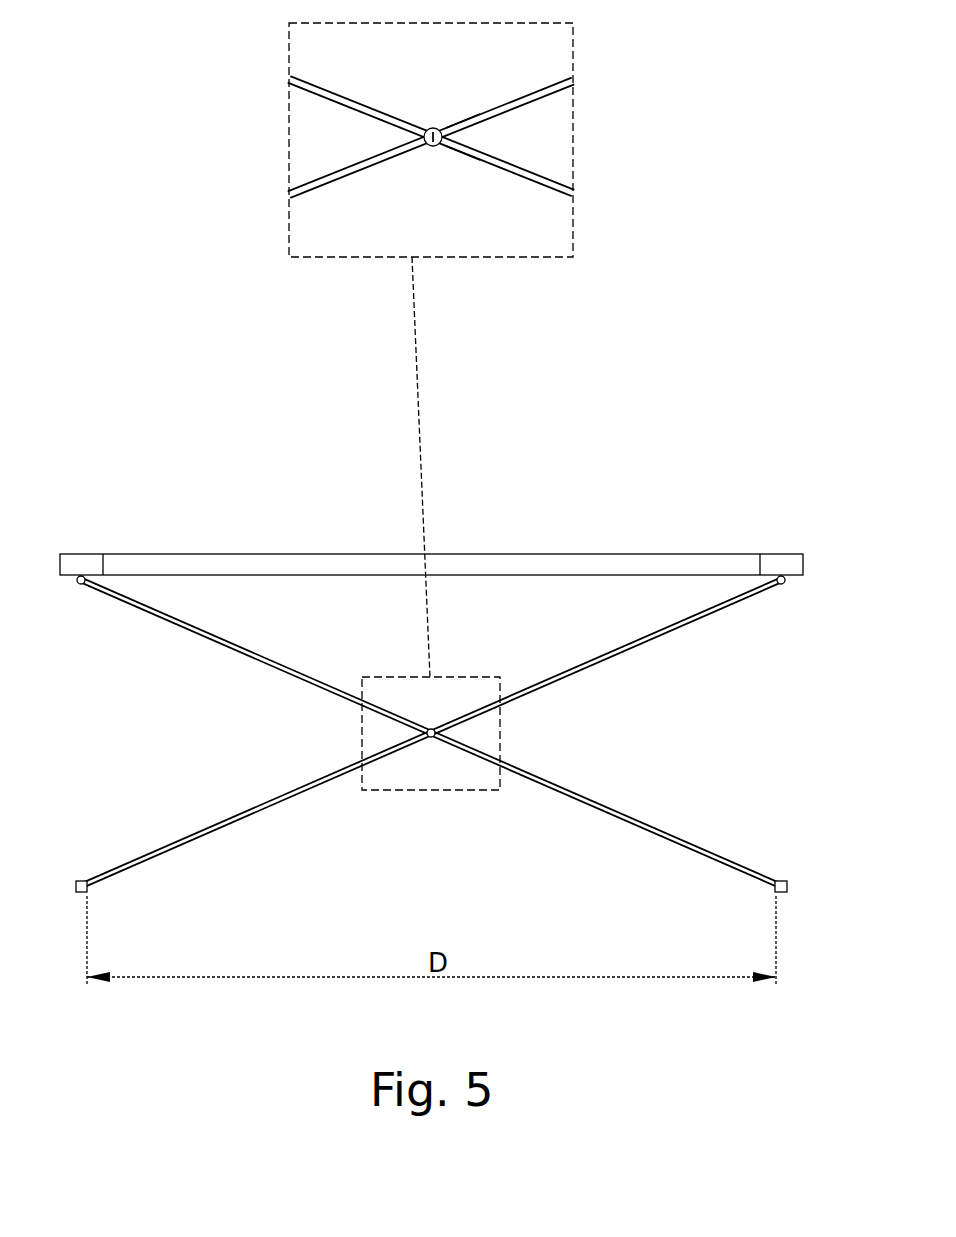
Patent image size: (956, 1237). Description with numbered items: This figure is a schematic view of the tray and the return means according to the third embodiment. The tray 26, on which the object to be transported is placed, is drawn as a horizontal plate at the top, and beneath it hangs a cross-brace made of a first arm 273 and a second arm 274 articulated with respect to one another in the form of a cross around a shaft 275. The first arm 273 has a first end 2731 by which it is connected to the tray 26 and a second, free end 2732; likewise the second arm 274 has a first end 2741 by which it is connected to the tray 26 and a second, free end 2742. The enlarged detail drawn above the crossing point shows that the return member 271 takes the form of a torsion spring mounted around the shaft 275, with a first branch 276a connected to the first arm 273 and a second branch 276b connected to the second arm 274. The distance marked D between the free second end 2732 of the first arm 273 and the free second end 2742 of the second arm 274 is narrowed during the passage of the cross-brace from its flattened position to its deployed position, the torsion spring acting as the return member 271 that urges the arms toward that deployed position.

The tray 26 is at (697, 562).
The first arm 273 is at (593, 658).
The second arm 274 is at (617, 812).
The shaft 275 is at (432, 740).
The return member 271 is at (428, 165).
The first branch 276a is at (473, 131).
The second branch 276b is at (458, 153).
The first end 2731 is at (788, 598).
The second end 2732 is at (80, 870).
The first end 2741 is at (74, 598).
The second end 2742 is at (787, 870).